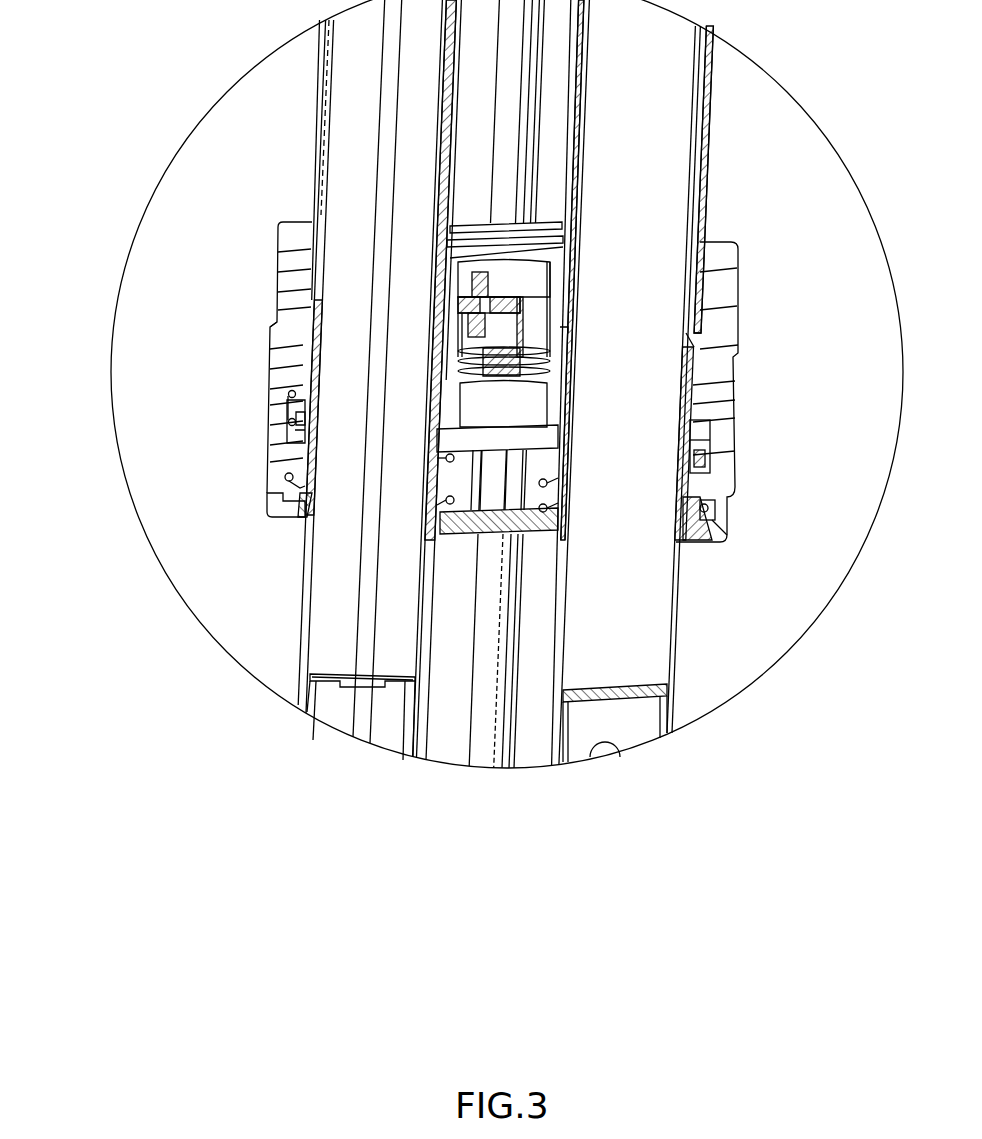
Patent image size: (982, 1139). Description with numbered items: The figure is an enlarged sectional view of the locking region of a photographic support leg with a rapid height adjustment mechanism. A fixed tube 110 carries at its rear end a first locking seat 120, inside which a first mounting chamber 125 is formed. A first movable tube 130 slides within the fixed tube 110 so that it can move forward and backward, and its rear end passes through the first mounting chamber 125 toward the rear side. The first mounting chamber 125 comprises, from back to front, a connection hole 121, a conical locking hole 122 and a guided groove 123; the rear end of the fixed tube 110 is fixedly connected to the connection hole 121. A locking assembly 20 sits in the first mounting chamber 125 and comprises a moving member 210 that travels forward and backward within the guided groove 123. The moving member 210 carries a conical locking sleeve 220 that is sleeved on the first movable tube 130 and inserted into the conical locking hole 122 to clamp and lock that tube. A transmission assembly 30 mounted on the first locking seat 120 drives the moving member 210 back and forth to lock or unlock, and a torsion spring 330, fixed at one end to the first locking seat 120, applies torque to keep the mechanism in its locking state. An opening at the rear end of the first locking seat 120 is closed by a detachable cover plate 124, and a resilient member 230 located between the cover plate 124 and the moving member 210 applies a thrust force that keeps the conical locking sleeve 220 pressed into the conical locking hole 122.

The locking assembly 20 is at (285, 404).
The transmission assembly 30 is at (510, 282).
The fixed tube 110 is at (700, 225).
The first locking seat 120 is at (712, 337).
The connection hole 121 is at (305, 298).
The conical locking hole 122 is at (300, 365).
The guided groove 123 is at (297, 453).
The cover plate 124 is at (282, 512).
The first mounting chamber 125 is at (180, 300).
The first movable tube 130 is at (670, 300).
The moving member 210 is at (700, 447).
The conical locking sleeve 220 is at (693, 400).
The resilient member 230 is at (707, 507).
The torsion spring 330 is at (540, 370).